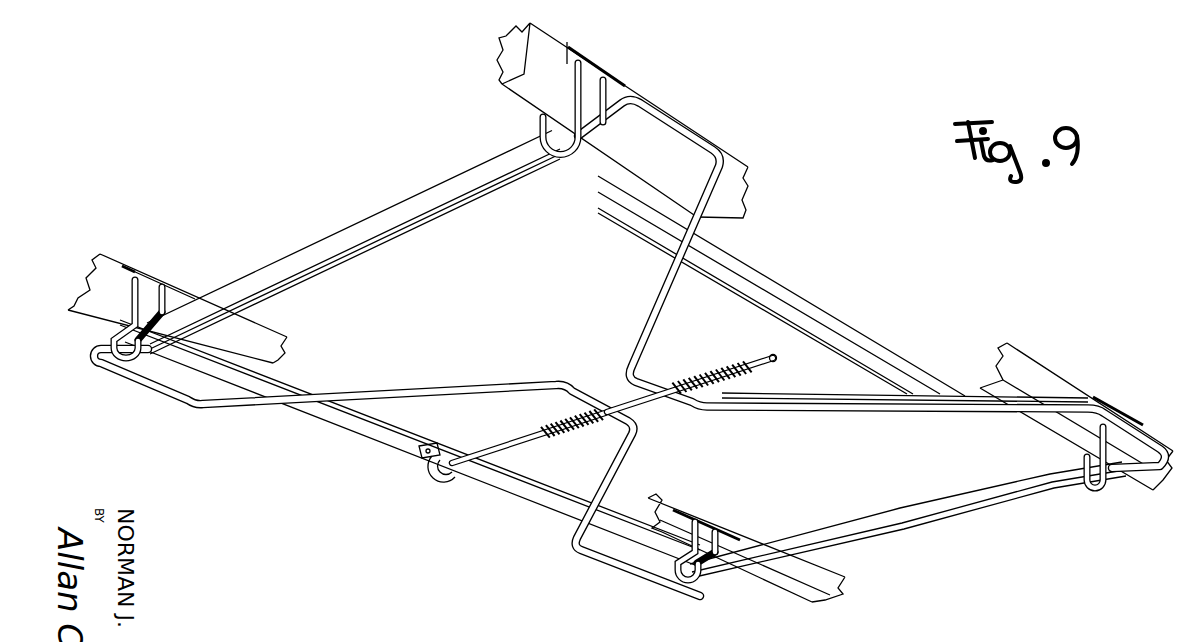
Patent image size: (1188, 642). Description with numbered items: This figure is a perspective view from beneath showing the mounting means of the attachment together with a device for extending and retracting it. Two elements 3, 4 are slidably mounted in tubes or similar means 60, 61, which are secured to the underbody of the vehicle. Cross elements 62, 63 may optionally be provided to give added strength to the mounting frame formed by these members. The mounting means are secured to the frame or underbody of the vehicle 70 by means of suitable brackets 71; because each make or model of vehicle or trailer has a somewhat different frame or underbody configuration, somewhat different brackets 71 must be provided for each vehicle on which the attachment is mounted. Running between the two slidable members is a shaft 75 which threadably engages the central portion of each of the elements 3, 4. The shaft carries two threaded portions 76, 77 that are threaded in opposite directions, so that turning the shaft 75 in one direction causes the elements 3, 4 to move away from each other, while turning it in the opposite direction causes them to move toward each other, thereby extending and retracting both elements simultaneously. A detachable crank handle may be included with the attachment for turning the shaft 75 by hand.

The element 3 is at (667, 137).
The element 4 is at (167, 390).
The tube 60 is at (484, 182).
The tube 61 is at (897, 520).
The cross element 62 is at (883, 353).
The cross element 63 is at (377, 430).
The frame or underbody of the vehicle 70 is at (737, 180).
The bracket 71 is at (535, 130).
The shaft 75 is at (777, 360).
The threaded portion 76 is at (700, 377).
The threaded portion 77 is at (560, 423).